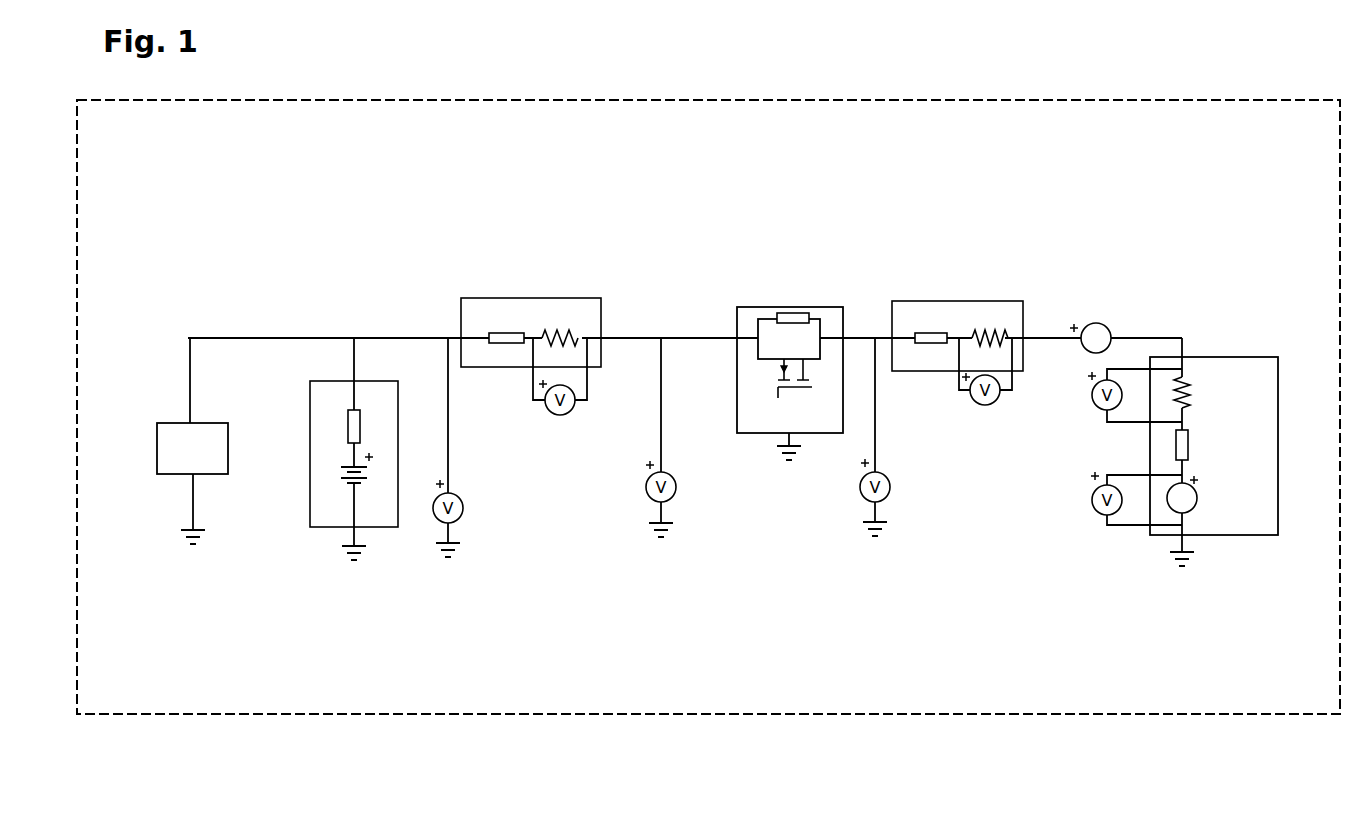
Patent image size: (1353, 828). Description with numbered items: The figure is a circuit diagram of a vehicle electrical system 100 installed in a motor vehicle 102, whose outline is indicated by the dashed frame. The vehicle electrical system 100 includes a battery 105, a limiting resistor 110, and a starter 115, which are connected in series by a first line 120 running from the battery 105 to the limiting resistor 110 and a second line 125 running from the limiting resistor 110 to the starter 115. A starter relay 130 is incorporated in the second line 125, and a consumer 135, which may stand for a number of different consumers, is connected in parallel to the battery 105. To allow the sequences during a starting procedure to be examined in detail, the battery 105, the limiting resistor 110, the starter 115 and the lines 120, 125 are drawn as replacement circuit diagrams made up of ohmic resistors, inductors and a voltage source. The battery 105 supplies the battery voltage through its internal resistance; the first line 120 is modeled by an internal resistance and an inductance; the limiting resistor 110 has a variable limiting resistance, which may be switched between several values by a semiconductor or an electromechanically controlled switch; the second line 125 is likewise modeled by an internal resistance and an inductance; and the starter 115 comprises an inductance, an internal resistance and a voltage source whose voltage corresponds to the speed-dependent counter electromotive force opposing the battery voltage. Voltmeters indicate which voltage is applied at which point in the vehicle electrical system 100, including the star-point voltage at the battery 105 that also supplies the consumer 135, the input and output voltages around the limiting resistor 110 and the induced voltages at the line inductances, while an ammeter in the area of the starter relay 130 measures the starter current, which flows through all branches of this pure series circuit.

The vehicle electrical system 100 is at (280, 223).
The motor vehicle 102 is at (1248, 100).
The battery 105 is at (318, 503).
The limiting resistor 110 is at (745, 313).
The starter 115 is at (1257, 365).
The first line 120 is at (461, 312).
The second line 125 is at (894, 305).
The starter relay 130 is at (1150, 337).
The consumer 135 is at (167, 444).